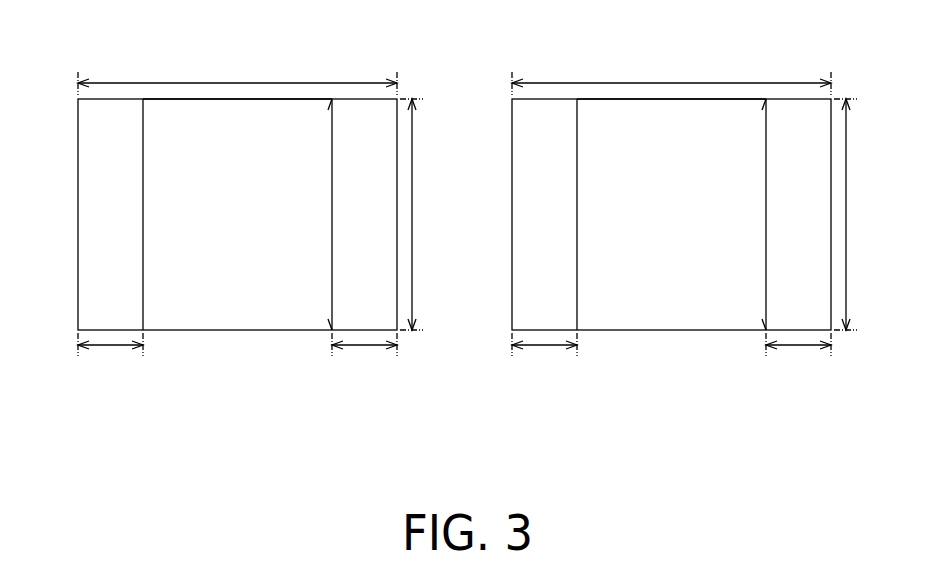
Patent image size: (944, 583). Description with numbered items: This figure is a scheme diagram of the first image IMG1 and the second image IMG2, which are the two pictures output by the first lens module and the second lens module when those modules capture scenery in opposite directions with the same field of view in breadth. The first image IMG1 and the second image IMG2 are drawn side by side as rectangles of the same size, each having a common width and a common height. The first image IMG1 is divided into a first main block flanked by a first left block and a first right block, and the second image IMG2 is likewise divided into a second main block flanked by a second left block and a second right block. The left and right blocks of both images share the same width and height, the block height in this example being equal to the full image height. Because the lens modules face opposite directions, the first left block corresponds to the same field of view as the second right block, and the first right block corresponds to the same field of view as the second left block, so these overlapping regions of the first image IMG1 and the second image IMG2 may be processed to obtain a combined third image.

The first image IMG1 is at (671, 245).
The second image IMG2 is at (237, 331).